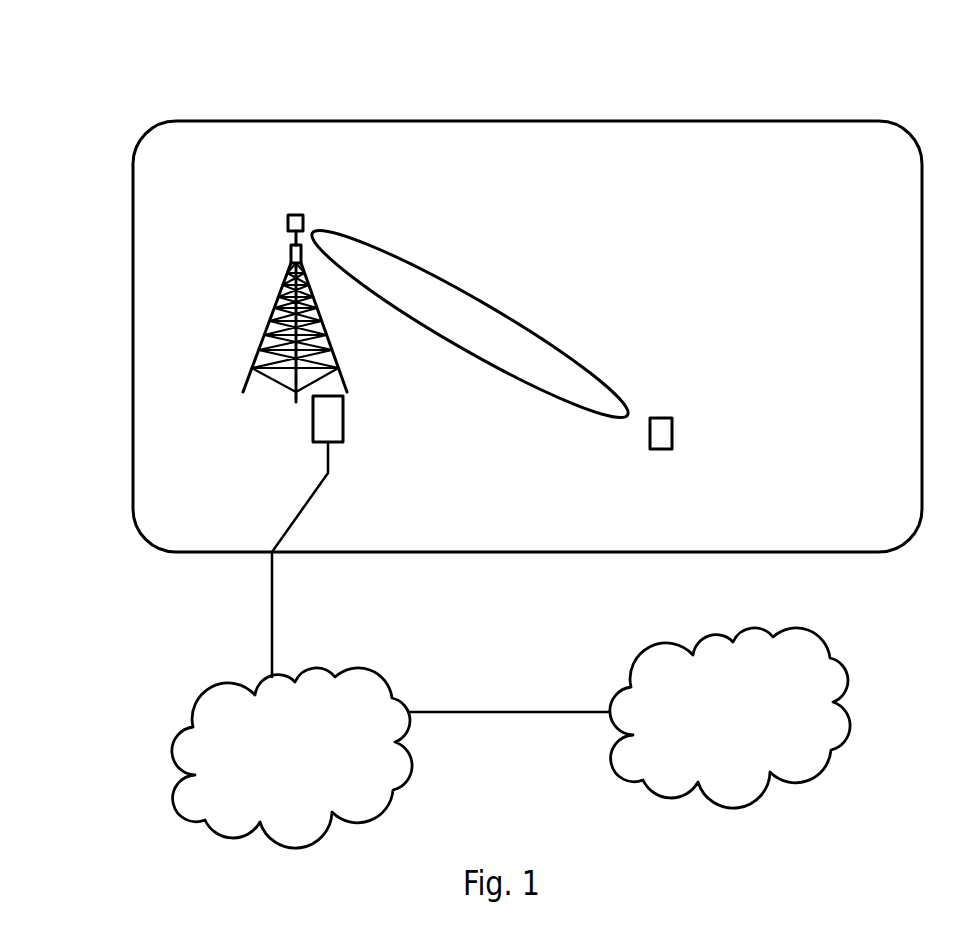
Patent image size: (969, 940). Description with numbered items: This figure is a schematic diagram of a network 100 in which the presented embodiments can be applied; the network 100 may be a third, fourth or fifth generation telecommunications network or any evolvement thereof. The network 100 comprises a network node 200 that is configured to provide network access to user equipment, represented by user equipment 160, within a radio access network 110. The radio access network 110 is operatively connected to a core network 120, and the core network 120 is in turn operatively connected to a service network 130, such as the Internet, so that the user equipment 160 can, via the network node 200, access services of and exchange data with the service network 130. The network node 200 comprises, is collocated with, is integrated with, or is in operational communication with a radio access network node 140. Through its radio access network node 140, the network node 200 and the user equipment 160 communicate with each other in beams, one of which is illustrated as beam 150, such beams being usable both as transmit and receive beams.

The network 100 is at (218, 89).
The (radio) access network 110 is at (132, 378).
The core network 120 is at (315, 772).
The service network 130 is at (753, 732).
The (radio) access network node 140 is at (285, 226).
The beam 150 is at (464, 349).
The user equipment 160 is at (673, 430).
The network node 200 is at (327, 418).